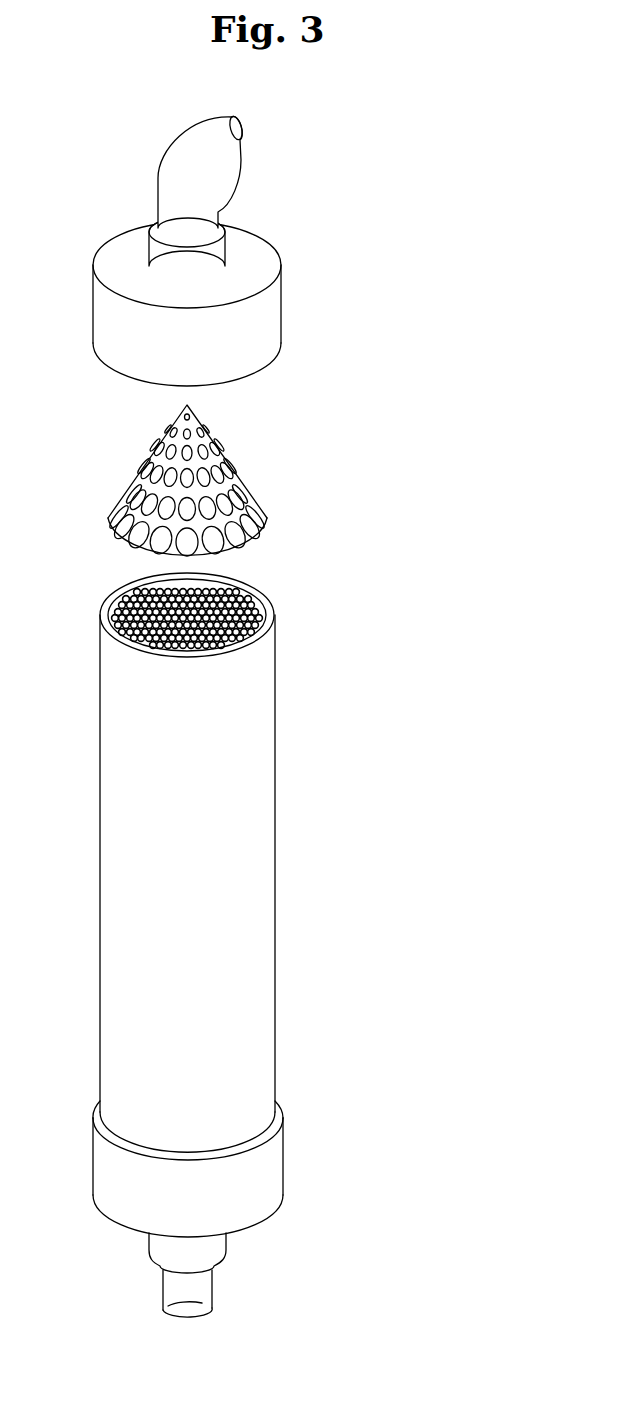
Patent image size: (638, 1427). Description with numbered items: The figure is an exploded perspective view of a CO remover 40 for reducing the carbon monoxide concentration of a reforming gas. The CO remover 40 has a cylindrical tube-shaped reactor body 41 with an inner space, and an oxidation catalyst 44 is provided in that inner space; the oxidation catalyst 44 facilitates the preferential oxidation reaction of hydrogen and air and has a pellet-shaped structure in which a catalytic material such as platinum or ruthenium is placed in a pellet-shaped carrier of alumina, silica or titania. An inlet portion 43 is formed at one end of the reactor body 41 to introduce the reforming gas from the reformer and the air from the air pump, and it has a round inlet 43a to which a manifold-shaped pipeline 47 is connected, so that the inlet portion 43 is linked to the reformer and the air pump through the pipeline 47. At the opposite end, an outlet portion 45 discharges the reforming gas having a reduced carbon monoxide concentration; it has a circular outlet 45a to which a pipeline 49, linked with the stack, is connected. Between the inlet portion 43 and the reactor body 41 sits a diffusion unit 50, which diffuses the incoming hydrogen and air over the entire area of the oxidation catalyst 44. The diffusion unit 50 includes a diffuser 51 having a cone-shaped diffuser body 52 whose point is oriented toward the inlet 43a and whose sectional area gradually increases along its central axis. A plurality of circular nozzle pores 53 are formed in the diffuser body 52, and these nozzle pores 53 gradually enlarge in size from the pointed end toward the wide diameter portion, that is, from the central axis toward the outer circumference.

The CO remover 40 is at (233, 101).
The reactor body 41 is at (276, 820).
The inlet portion 43 is at (300, 310).
The inlet 43a is at (226, 229).
The oxidation catalyst 44 is at (241, 602).
The outlet portion 45 is at (133, 1257).
The outlet 45a is at (214, 1268).
The pipeline 47 is at (160, 172).
The pipeline 49 is at (213, 1298).
The diffusion unit 50 is at (280, 433).
The diffuser 51 is at (130, 467).
The diffuser body 52 is at (238, 480).
The nozzle pores 53 is at (256, 505).